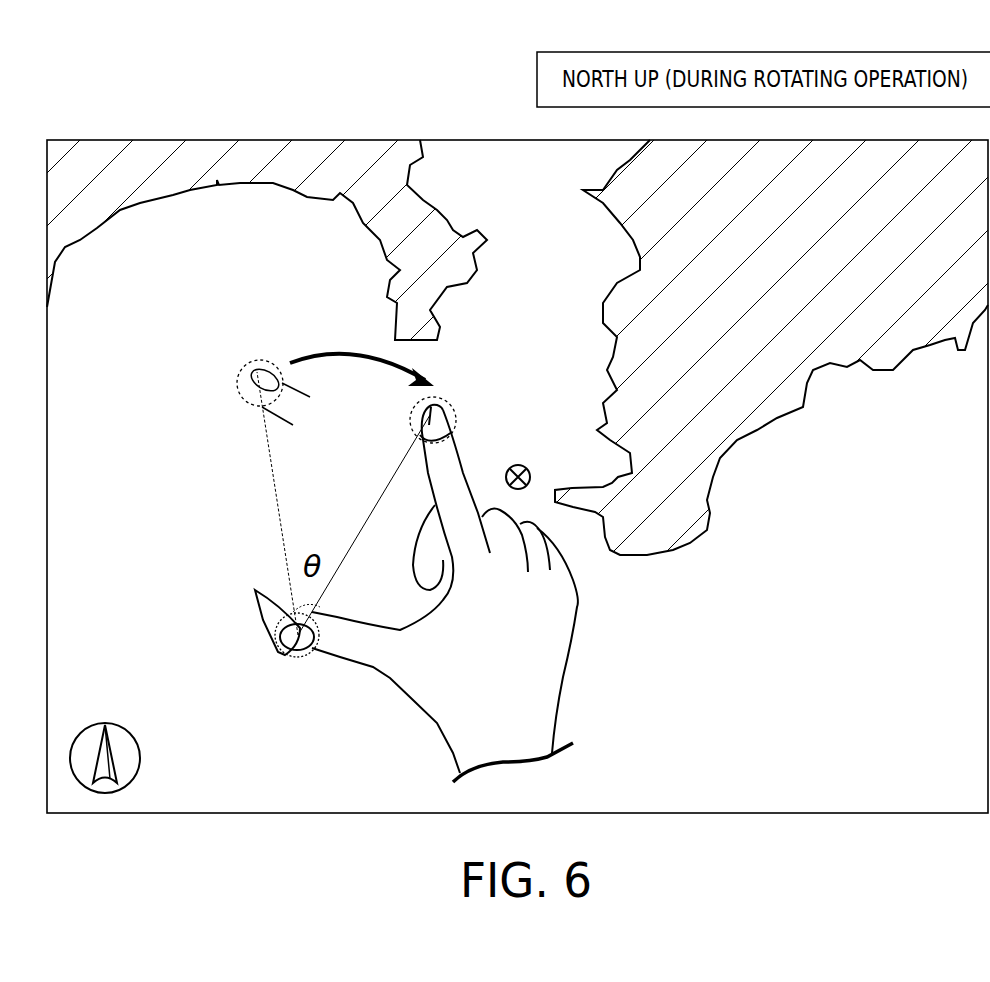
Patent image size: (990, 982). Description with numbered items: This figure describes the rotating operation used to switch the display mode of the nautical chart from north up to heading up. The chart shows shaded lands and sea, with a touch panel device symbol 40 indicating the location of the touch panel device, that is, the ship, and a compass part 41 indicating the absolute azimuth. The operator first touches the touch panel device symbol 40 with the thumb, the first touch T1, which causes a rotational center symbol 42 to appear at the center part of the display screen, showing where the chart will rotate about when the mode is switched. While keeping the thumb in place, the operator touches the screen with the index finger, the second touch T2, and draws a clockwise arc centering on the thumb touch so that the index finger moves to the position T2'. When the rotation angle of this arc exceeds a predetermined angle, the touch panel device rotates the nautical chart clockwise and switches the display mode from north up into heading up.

The touch panel device symbol 40 is at (257, 613).
The compass part 41 is at (83, 730).
The rotational center symbol 42 is at (518, 465).
The first touch T1 is at (313, 652).
The second touch T2 is at (267, 342).
The second touch after rotation T2' is at (461, 390).